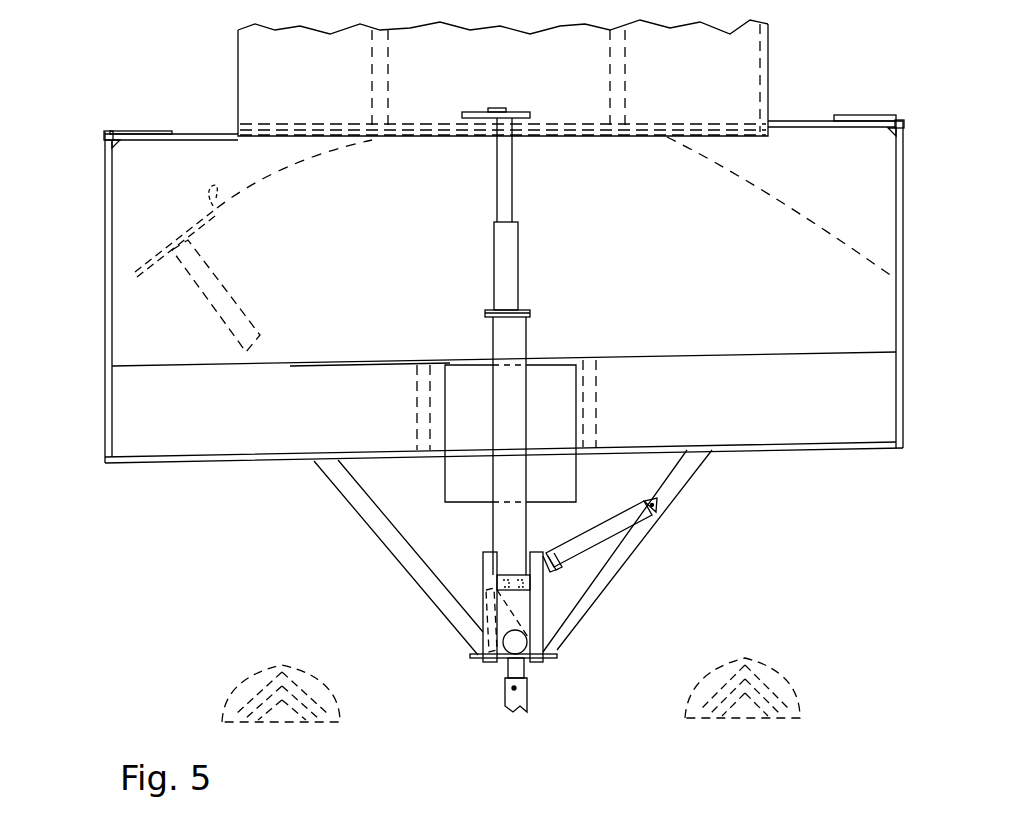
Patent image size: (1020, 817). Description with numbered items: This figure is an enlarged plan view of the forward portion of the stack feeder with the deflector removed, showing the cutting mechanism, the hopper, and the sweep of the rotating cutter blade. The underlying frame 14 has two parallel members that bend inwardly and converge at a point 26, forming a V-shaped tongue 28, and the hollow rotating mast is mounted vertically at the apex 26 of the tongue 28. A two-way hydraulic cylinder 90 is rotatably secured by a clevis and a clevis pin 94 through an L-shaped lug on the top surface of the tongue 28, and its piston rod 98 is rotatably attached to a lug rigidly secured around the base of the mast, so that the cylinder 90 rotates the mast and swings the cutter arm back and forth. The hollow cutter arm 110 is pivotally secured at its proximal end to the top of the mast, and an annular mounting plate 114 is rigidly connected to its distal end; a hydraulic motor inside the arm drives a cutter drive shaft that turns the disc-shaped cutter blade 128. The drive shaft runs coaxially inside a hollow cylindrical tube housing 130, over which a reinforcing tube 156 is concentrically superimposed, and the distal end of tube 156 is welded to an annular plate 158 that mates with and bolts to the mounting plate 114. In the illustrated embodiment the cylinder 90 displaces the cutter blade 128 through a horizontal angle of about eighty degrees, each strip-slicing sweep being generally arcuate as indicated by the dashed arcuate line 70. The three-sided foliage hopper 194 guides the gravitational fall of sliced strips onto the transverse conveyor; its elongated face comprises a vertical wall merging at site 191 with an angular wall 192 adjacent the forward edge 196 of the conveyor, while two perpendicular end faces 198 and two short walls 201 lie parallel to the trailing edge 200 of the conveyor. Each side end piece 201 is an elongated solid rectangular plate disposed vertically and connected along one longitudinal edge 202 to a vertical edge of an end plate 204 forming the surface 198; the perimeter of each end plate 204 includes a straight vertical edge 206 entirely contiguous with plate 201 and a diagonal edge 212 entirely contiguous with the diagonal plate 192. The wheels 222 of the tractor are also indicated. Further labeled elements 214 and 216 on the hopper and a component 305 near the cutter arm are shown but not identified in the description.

The underlying frame 14 is at (630, 561).
The point of the tongue 26 is at (460, 623).
The V-shaped tongue 28 is at (392, 557).
The swing path 70 is at (698, 143).
The two-way hydraulic cylinder 90 is at (600, 540).
The clevis pin 94 is at (648, 503).
The piston rod 98 is at (553, 552).
The hollow cutter arm 110 is at (508, 532).
The annular mounting plate 114 is at (540, 313).
The disc shaped cutter blade 128 is at (527, 110).
The hollow cylindrical tube housing 130 is at (509, 205).
The reinforcing tube 156 is at (510, 240).
The annular mounting plate 158 is at (527, 310).
The merging site 191 is at (300, 364).
The angular wall 192 is at (218, 434).
The foliage hopper 194 is at (98, 126).
The forward edge of conveyor 196 is at (366, 357).
The end face 198 is at (104, 210).
The storage box 200 is at (438, 138).
The short wall 201 is at (170, 131).
The longitudinal edge 202 is at (110, 131).
The end plate 204 is at (104, 150).
The straight vertical edge 206 is at (112, 141).
The diagonal edge 212 is at (115, 395).
The support member 214 is at (417, 398).
The top rail 216 is at (178, 133).
The tractor wheels 222 is at (283, 670).
The housing 305 is at (445, 480).